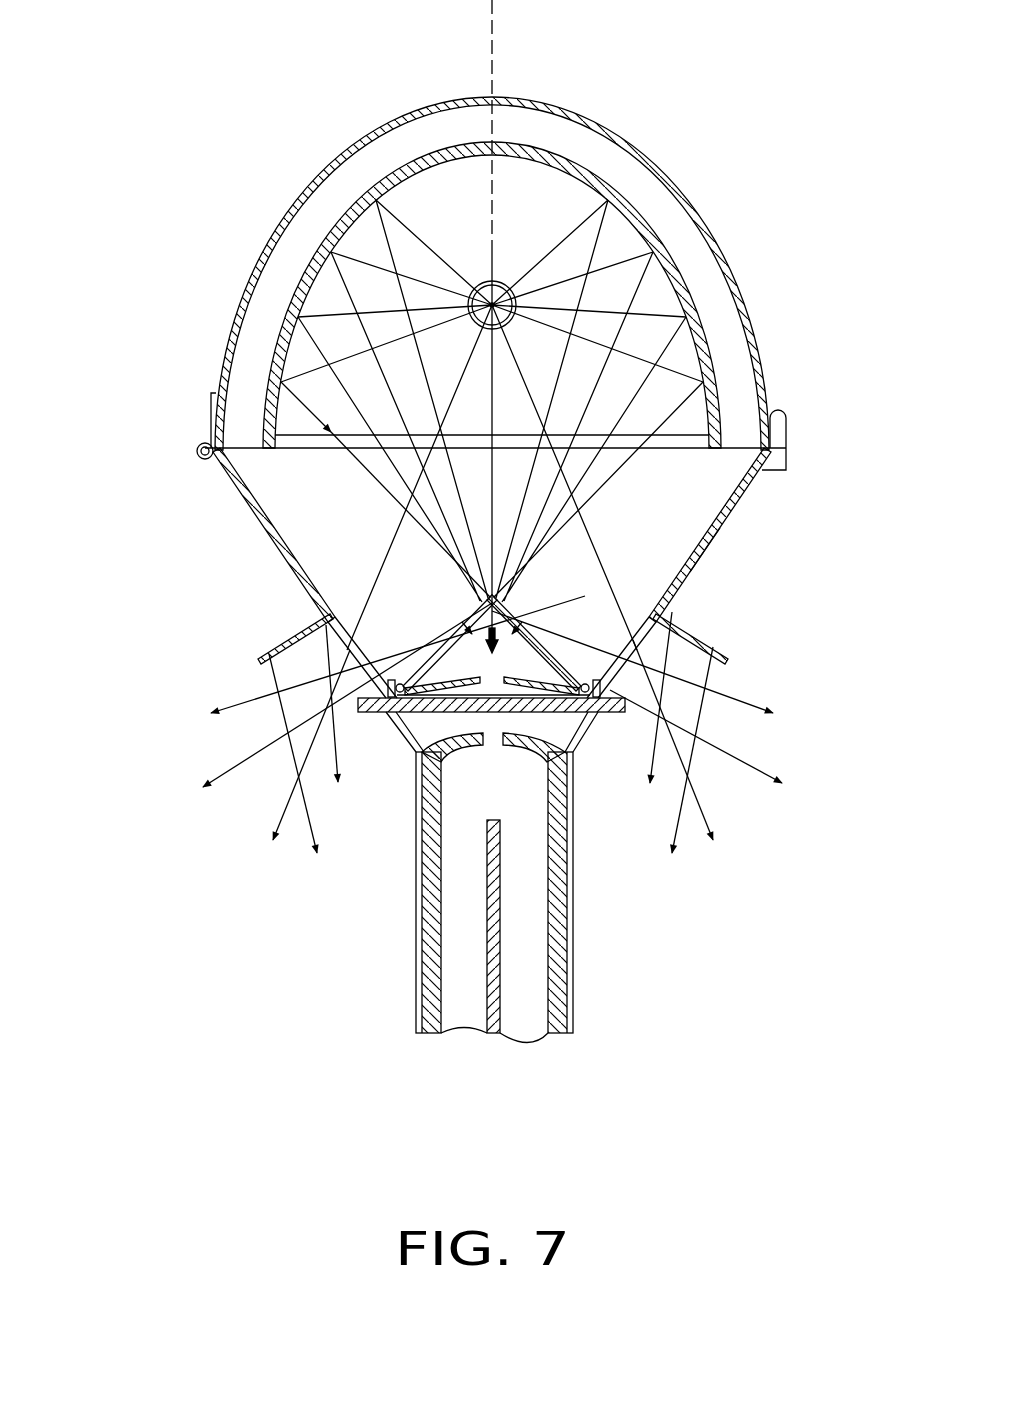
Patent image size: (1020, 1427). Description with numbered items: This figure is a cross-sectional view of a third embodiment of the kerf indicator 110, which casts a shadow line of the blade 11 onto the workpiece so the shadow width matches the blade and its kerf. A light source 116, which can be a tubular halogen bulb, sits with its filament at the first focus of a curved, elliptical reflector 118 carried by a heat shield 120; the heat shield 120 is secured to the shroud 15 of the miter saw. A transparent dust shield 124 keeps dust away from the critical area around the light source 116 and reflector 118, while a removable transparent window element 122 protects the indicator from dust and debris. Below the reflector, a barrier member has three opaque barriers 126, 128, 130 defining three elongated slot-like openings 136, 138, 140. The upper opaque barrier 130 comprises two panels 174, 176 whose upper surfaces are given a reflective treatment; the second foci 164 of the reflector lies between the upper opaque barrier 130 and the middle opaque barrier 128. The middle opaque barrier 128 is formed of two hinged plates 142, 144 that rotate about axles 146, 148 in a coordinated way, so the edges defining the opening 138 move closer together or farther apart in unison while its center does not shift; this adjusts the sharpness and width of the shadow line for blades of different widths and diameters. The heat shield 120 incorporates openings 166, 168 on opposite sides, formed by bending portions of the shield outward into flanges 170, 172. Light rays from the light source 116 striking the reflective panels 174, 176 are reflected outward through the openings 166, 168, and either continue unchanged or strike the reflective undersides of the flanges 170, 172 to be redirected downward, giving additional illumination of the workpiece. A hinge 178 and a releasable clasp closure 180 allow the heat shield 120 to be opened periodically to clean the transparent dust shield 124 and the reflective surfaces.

The kerf indicator 110 is at (747, 140).
The heat shield 120 is at (285, 215).
The reflector 118 is at (424, 180).
The transparent dust shield 124 is at (280, 382).
The light source 116 is at (494, 296).
The hinge 178 is at (195, 451).
The releasable clasp closure 180 is at (788, 415).
The panel 174 is at (327, 617).
The flange 172 is at (273, 642).
The panel 176 is at (660, 614).
The flange 170 is at (707, 633).
The hinged plate 142 is at (624, 613).
The opening 140 is at (487, 597).
The hinged plate 144 is at (470, 655).
The opening 138 is at (535, 612).
The upper opaque barrier 130 is at (465, 630).
The second foci 164 is at (543, 610).
The opening 136 is at (490, 713).
The opaque barrier 126 is at (462, 712).
The middle opaque barrier 128 is at (385, 715).
The transparent window element 122 is at (615, 719).
The axle 146 is at (383, 703).
The axle 148 is at (667, 710).
The opening 166 is at (335, 657).
The opening 168 is at (650, 658).
The shroud 15 is at (553, 922).
The blade 11 is at (505, 1002).